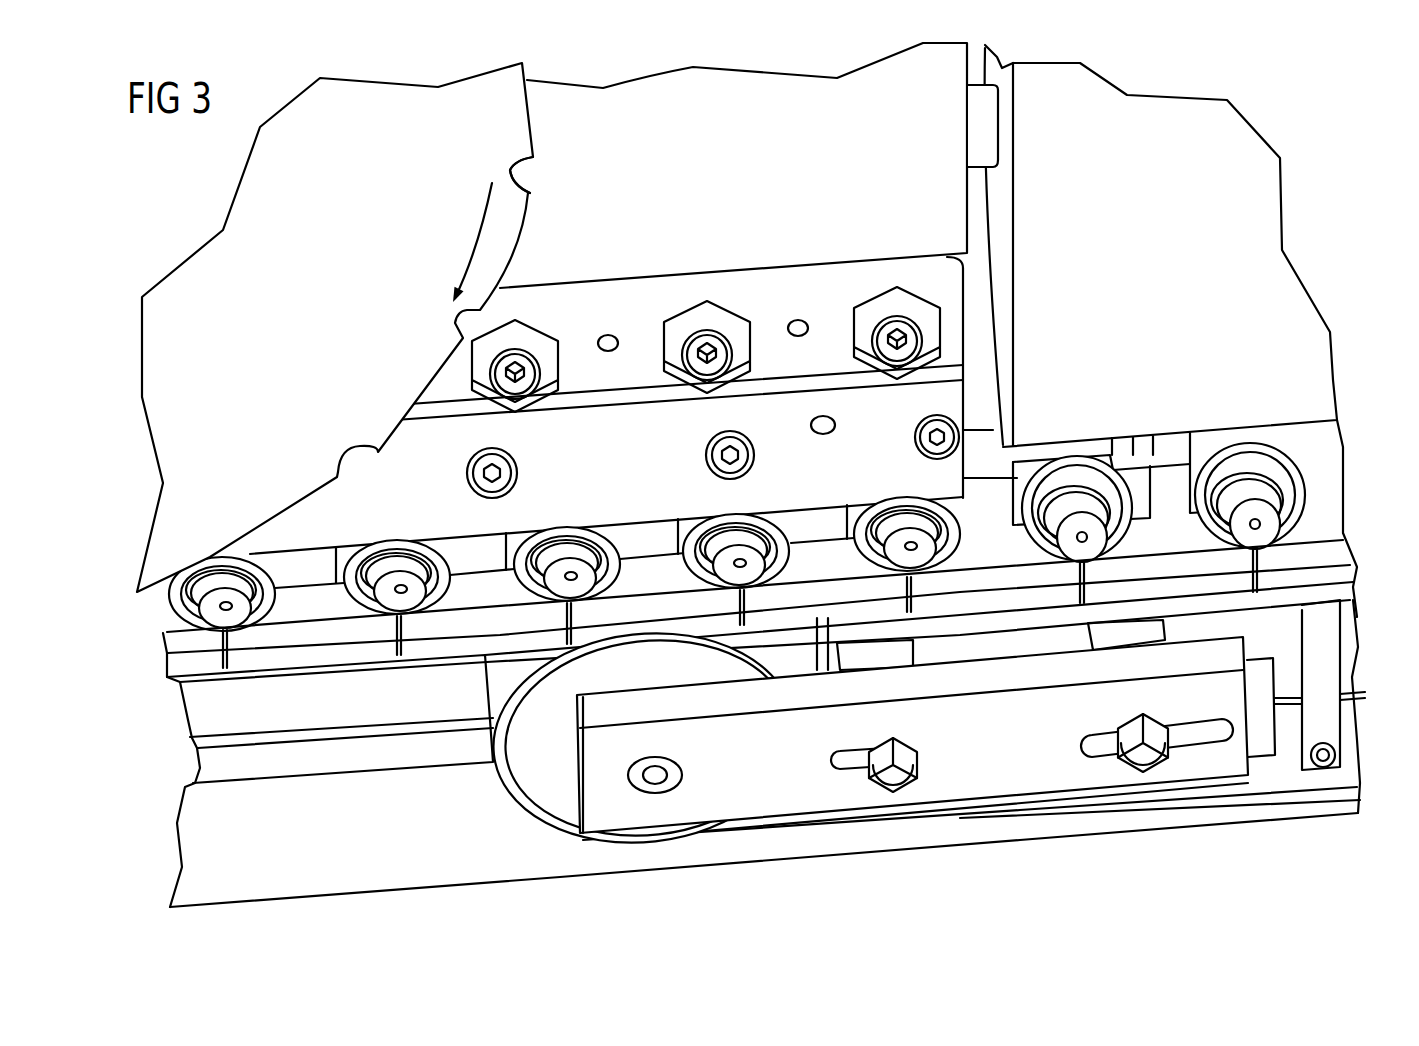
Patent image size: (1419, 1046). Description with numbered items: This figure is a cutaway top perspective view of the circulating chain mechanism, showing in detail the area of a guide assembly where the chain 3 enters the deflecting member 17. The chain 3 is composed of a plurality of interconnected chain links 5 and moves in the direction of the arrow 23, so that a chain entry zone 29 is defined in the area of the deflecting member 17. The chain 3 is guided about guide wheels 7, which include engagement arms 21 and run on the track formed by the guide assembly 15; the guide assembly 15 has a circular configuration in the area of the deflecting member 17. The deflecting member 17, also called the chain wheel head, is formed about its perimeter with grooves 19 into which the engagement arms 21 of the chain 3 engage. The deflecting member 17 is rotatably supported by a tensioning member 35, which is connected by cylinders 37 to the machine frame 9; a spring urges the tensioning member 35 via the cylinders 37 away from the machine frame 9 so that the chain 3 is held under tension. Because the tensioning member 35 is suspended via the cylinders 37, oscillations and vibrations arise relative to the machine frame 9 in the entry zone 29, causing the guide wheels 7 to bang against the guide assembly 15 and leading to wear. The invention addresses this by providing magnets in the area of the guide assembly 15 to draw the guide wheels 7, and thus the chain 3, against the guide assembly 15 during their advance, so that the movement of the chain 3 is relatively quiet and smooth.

The chain 3 is at (1367, 553).
The chain links 5 is at (315, 655).
The guide wheels 7 is at (172, 605).
The machine frame 9 is at (1235, 193).
The guide assembly 15 is at (587, 430).
The deflecting member 17 is at (453, 113).
The grooves 19 is at (530, 183).
The engagement arms 21 is at (411, 587).
The arrow 23 is at (477, 237).
The chain entry zone 29 is at (227, 498).
The tensioning member 35 is at (920, 190).
The cylinders 37 is at (980, 123).